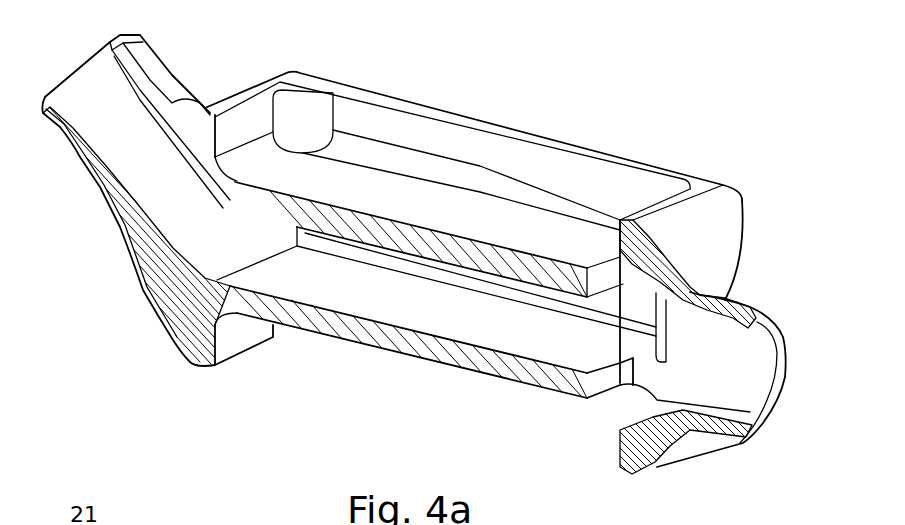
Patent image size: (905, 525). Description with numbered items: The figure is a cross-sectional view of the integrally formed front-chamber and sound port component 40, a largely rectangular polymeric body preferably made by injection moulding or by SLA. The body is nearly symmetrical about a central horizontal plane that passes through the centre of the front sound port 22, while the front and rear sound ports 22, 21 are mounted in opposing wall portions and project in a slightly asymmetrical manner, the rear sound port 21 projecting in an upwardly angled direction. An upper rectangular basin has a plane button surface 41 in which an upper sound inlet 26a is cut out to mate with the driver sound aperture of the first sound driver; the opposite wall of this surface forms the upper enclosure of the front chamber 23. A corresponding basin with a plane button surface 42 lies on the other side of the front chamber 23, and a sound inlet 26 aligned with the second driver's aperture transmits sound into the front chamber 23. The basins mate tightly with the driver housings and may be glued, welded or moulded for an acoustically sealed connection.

The rear sound port 21 is at (97, 83).
The front sound port 22 is at (763, 380).
The front chamber 23 is at (267, 277).
The sound inlet 26 is at (623, 385).
The upper sound inlet 26a is at (598, 278).
The front-chamber component 40 is at (760, 272).
The plane button surface 41 is at (465, 203).
The plane button surface 42 is at (282, 336).